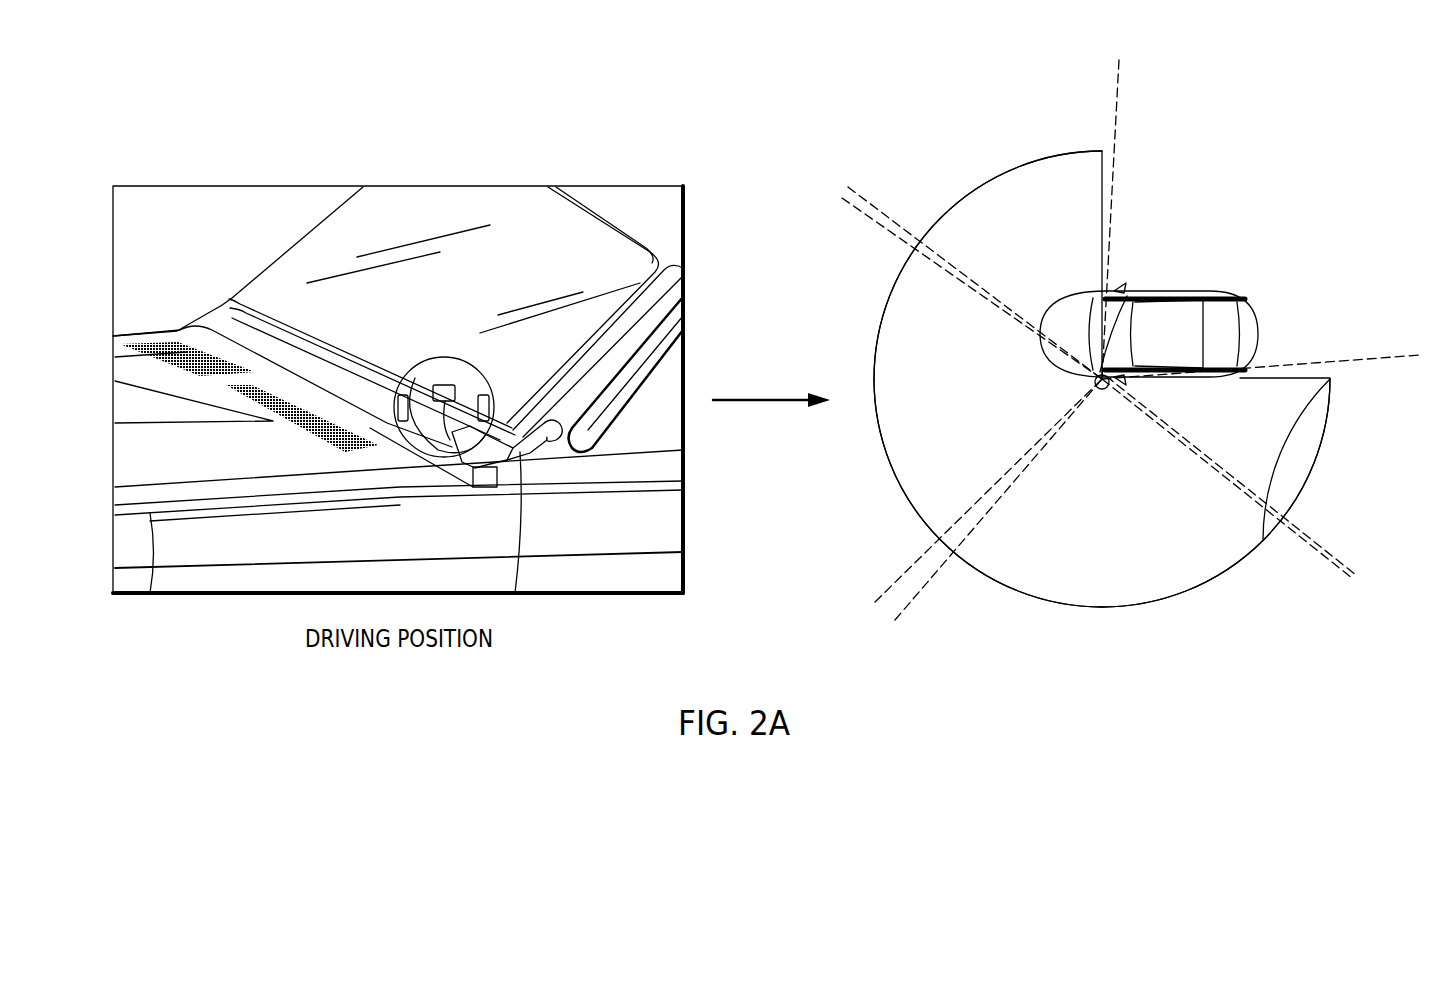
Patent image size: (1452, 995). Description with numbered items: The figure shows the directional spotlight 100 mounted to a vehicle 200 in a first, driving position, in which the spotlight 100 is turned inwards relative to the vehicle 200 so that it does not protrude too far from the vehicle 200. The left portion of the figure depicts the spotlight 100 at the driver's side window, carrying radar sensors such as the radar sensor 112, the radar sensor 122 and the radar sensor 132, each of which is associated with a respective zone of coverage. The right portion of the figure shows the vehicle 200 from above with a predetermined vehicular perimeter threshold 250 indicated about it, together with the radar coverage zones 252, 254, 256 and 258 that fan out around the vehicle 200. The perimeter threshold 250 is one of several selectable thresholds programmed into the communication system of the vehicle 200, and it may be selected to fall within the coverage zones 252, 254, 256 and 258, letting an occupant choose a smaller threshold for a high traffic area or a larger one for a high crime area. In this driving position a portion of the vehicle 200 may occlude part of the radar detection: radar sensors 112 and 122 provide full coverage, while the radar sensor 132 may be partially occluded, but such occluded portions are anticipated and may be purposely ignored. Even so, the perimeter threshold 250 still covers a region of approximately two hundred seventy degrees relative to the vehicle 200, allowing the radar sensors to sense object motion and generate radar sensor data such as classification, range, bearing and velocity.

The directional spotlight 100 is at (441, 357).
The radar sensor 112 is at (370, 440).
The radar sensor 122 is at (472, 470).
The radar sensor 132 is at (489, 394).
The vehicle 200 is at (553, 220).
The predetermined vehicular perimeter threshold 250 is at (1222, 626).
The zone of coverage 252 is at (1322, 440).
The zone of coverage 254 is at (1053, 606).
The zone of coverage 256 is at (891, 466).
The zone of coverage 258 is at (985, 186).